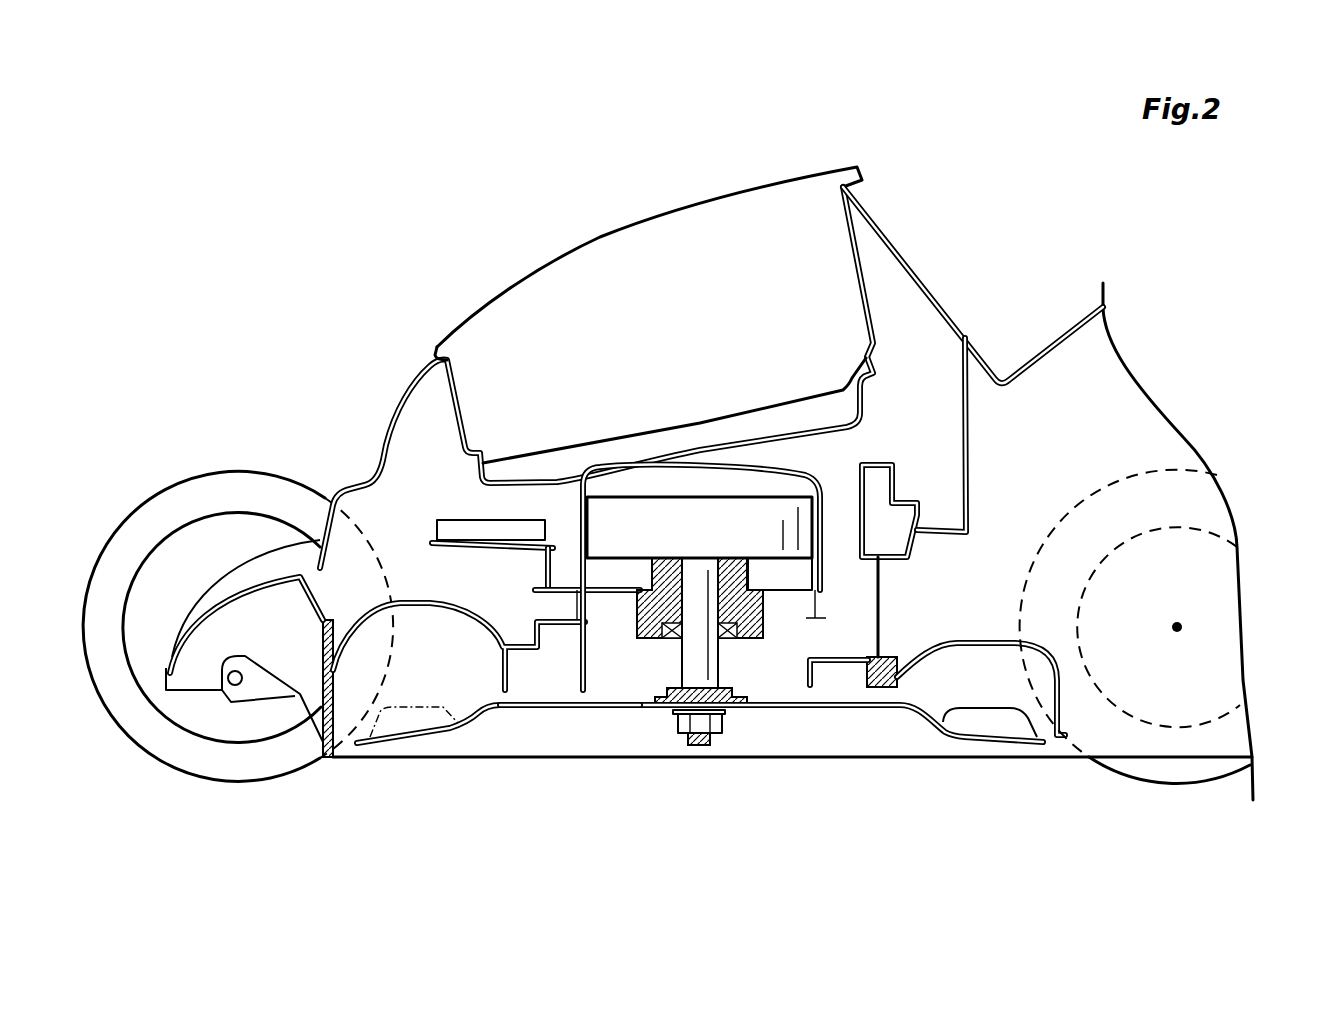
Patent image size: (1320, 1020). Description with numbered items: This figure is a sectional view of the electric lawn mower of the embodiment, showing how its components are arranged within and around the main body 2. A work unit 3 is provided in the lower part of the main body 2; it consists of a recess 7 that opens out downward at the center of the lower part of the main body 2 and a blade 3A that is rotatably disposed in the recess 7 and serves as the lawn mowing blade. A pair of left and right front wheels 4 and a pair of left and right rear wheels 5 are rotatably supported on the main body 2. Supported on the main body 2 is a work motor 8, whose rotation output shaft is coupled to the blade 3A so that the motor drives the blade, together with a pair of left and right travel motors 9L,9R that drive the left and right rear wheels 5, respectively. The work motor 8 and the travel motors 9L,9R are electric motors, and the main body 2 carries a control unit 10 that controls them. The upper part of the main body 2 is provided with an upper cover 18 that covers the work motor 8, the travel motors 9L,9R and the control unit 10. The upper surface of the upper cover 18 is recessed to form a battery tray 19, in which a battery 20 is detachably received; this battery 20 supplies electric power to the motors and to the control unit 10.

The main body 2 is at (247, 588).
The work unit 3 is at (760, 715).
The blade 3A is at (568, 712).
The front wheels 4 is at (180, 752).
The rear wheels 5 is at (1168, 768).
The recess 7 is at (420, 605).
The work motor 8 is at (802, 543).
The travel motors 9L,9R is at (1170, 588).
The control unit 10 is at (458, 524).
The upper cover 18 is at (935, 265).
The battery tray 19 is at (858, 238).
The battery 20 is at (515, 300).